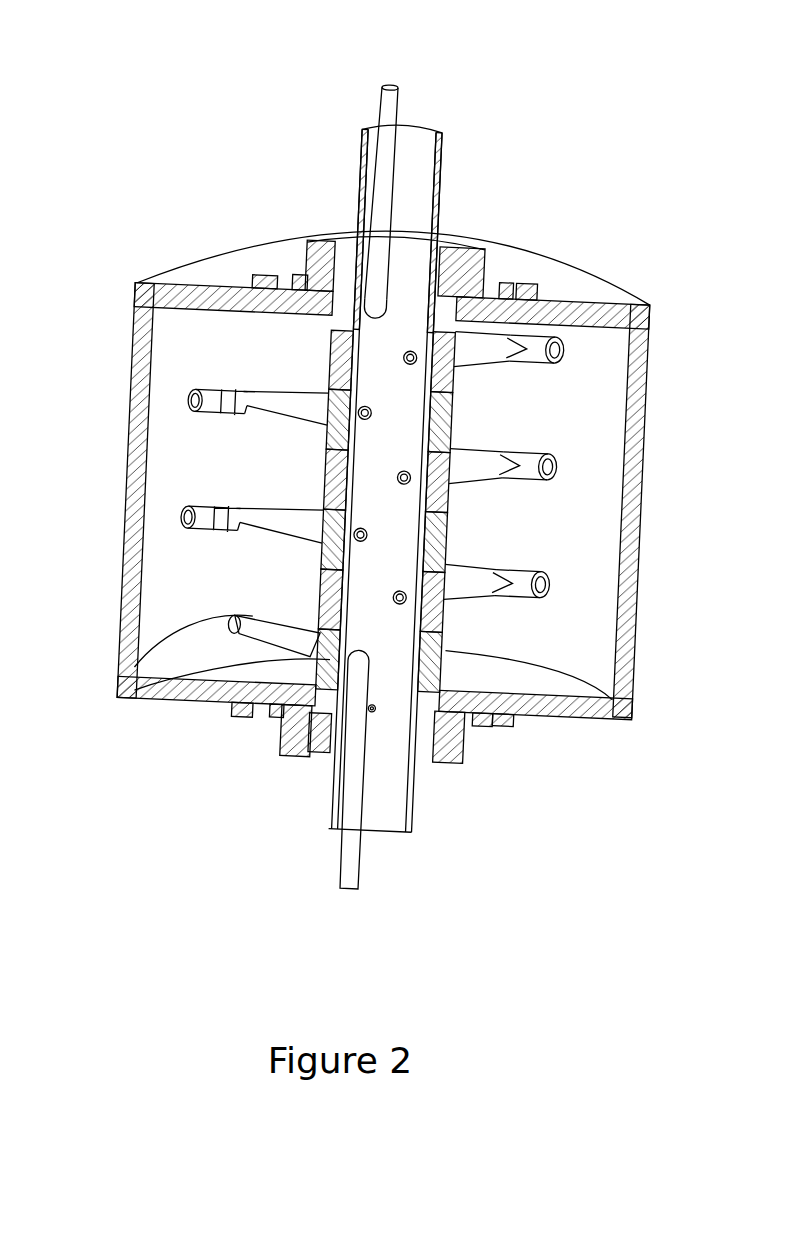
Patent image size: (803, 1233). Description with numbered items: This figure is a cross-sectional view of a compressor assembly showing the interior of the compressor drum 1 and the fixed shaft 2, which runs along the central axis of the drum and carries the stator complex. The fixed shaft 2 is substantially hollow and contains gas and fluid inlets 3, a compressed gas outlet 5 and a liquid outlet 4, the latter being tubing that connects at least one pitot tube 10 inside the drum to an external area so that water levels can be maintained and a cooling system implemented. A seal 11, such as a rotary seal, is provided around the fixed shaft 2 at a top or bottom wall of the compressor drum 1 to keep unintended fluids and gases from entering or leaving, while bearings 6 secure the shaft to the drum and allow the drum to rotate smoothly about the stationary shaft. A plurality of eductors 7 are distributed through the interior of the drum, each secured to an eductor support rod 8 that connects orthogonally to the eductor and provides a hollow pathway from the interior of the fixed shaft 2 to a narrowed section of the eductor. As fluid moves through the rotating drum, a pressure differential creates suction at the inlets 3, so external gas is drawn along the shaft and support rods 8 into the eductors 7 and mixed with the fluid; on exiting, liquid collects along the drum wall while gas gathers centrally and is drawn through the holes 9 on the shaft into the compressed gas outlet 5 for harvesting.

The compressor drum 1 is at (132, 345).
The fixed shaft 2 is at (362, 188).
The gas and fluid inlets 3 is at (425, 128).
The liquid outlet 4 is at (347, 890).
The compressed gas outlet 5 is at (387, 88).
The bearing 6 is at (452, 257).
The eductor 7 is at (195, 399).
The eductor support rod 8 is at (267, 412).
The holes 9 is at (367, 322).
The pitot tube 10 is at (128, 645).
The seal 11 is at (487, 293).